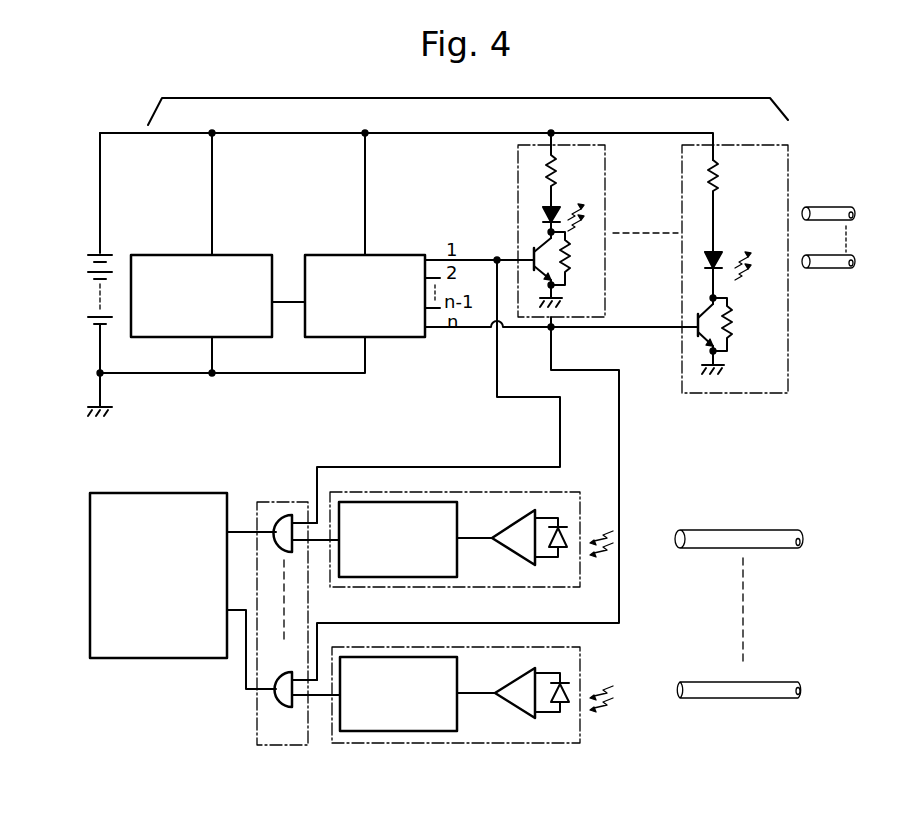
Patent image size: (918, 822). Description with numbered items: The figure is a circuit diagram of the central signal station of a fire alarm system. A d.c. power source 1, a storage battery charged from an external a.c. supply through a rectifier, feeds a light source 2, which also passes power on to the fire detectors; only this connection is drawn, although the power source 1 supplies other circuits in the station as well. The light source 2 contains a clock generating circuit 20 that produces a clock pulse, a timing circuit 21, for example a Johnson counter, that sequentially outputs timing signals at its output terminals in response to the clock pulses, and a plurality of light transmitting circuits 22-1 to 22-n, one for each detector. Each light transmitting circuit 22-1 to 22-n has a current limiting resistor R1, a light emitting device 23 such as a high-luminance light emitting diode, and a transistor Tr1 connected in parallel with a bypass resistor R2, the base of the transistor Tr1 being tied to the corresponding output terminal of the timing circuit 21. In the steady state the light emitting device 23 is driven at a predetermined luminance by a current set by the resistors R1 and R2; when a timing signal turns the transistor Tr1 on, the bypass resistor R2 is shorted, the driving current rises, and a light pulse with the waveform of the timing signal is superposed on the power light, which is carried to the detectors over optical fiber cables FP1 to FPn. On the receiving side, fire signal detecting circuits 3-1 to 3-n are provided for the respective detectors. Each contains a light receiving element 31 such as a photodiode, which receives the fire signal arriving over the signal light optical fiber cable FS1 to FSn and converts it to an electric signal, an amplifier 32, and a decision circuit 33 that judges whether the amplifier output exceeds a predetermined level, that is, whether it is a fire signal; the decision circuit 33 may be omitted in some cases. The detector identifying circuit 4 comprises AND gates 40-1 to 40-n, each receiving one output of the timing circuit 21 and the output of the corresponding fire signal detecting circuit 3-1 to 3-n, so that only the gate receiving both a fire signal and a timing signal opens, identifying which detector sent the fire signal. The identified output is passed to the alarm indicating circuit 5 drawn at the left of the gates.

The d.c. power source 1 is at (114, 262).
The light source 2 is at (653, 98).
The clock generating circuit 20 is at (262, 255).
The timing circuit 21 is at (395, 255).
The light transmitting circuit 22-1 is at (605, 182).
The light transmitting circuit 22-n is at (813, 194).
The light emitting device 23 is at (542, 217).
The current limiting resistor R1 is at (556, 172).
The bypass resistor R2 is at (570, 262).
The transistor Tr1 is at (532, 256).
The optical fiber cable FP1 is at (816, 220).
The optical fiber cable FPn is at (828, 268).
The optical fiber cable for signal light FS1 is at (748, 530).
The optical fiber cable for signal light FSn is at (740, 706).
The fire signal detecting circuit 3-1 is at (580, 503).
The fire signal detecting circuit 3-n is at (580, 664).
The light receiving element 31 is at (565, 560).
The amplifier 32 is at (522, 563).
The decision circuit 33 is at (365, 580).
The detector identifying circuit 4 is at (302, 501).
The AND gate 40-1 is at (280, 522).
The AND gate 40-n is at (276, 697).
The alarm indicating circuit 5 is at (172, 493).